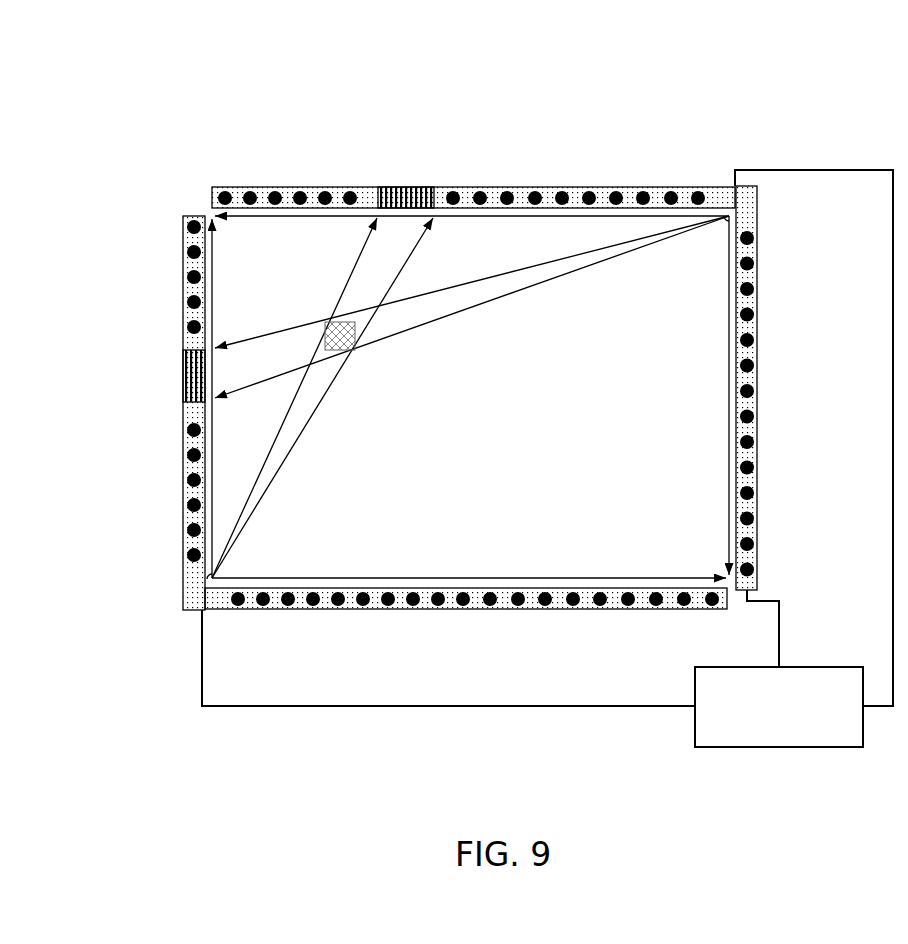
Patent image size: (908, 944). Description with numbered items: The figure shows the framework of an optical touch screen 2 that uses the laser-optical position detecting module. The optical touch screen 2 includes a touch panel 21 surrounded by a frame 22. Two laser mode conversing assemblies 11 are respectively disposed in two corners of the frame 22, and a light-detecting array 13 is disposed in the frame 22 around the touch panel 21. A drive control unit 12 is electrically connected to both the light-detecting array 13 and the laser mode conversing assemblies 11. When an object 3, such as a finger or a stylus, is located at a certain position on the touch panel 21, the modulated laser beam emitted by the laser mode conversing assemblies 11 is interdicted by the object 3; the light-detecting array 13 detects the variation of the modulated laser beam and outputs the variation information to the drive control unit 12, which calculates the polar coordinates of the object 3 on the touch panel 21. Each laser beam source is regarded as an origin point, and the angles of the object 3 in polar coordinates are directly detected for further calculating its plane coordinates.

The optical touch screen 2 is at (117, 66).
The object 3 is at (335, 350).
The laser mode conversing assembly 11 is at (218, 576).
The drive control unit 12 is at (795, 726).
The light-detecting array 13 is at (470, 186).
The touch panel 21 is at (682, 428).
The frame 22 is at (316, 187).